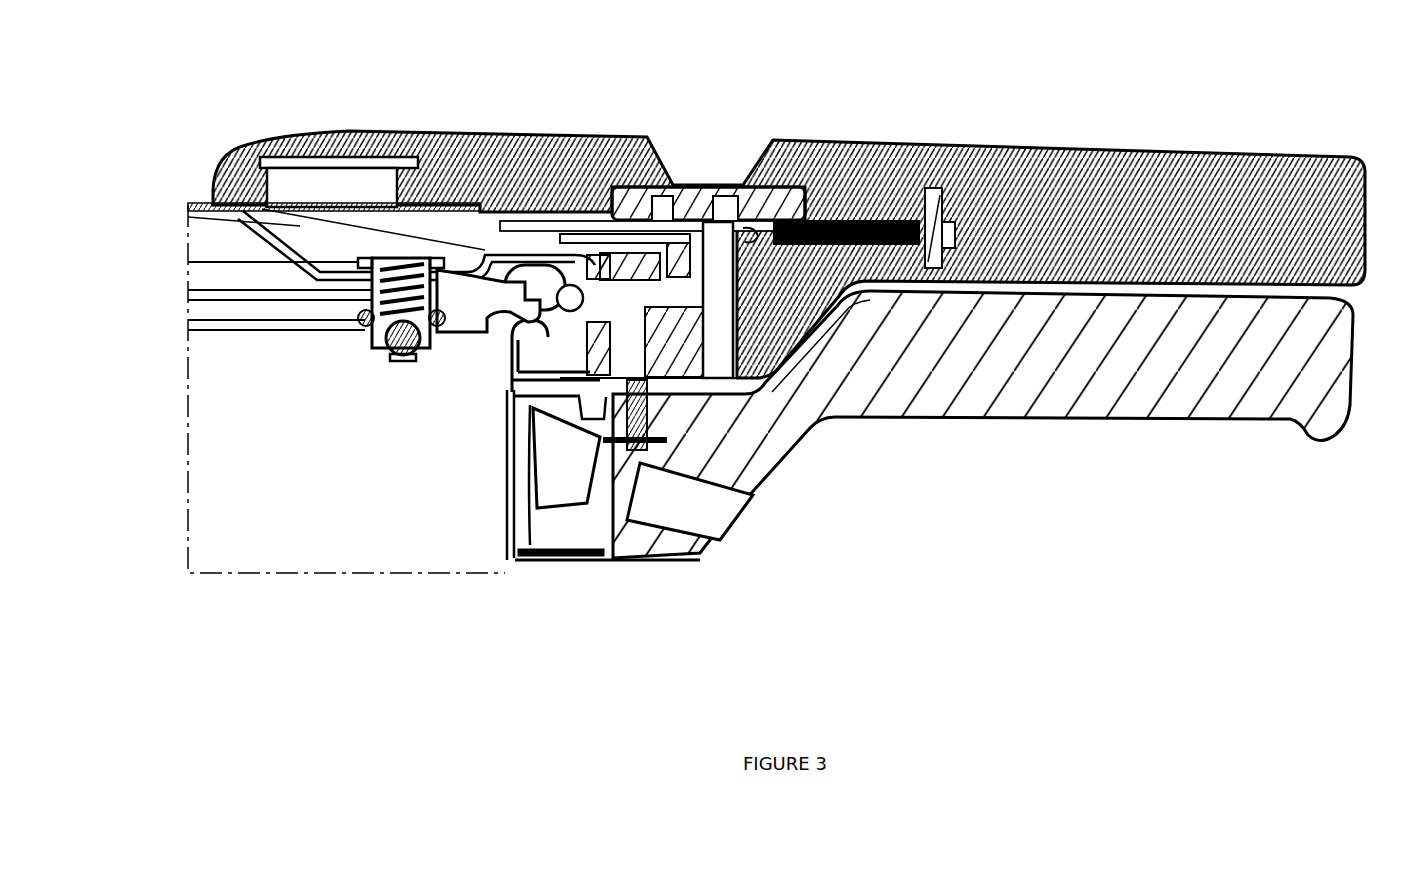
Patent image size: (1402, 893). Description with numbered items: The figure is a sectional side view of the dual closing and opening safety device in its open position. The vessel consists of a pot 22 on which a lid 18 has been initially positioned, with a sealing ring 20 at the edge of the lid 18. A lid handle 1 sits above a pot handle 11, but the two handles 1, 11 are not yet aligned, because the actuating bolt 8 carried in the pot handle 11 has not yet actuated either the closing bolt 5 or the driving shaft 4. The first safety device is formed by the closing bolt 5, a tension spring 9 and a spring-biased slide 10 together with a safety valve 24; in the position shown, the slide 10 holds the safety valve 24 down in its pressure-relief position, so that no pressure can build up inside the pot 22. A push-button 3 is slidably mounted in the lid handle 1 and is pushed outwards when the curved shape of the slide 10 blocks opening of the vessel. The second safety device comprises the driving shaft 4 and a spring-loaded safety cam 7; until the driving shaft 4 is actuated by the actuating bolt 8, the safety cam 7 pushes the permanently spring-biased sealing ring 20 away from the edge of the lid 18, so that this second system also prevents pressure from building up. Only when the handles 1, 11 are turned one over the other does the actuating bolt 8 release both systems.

The lid handle 1 is at (1082, 146).
The push-button 3 is at (697, 185).
The driving shaft 4 is at (693, 343).
The closing bolt 5 is at (807, 430).
The safety cam 7 is at (590, 298).
The actuating bolt 8 is at (710, 370).
The tension spring 9 is at (893, 216).
The slide 10 is at (360, 330).
The pot handle 11 is at (1050, 418).
The lid 18 is at (197, 199).
The sealing ring 20 is at (480, 333).
The pot 22 is at (503, 543).
The safety valve 24 is at (382, 358).